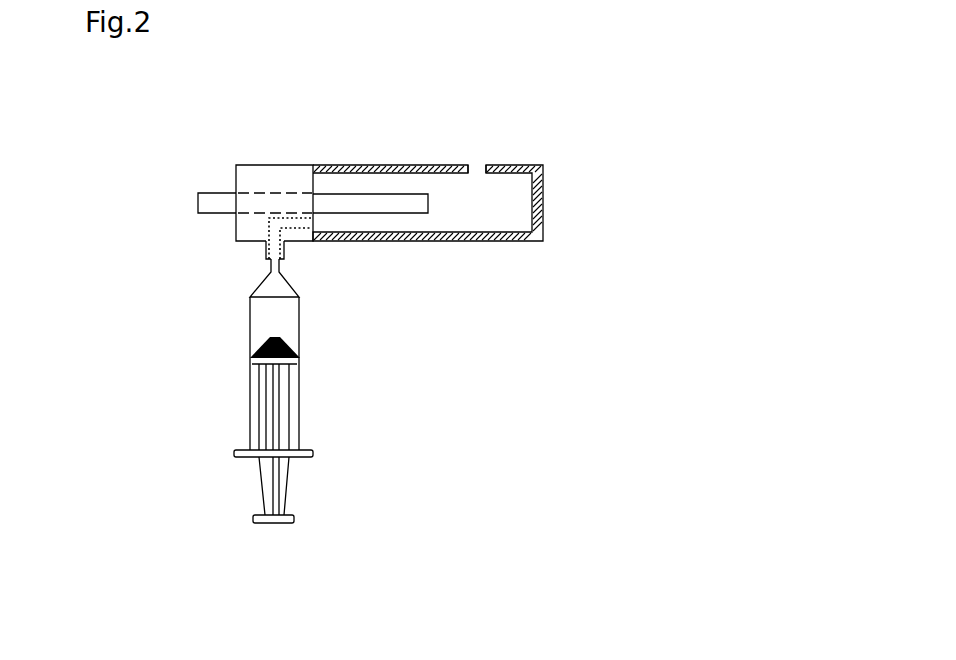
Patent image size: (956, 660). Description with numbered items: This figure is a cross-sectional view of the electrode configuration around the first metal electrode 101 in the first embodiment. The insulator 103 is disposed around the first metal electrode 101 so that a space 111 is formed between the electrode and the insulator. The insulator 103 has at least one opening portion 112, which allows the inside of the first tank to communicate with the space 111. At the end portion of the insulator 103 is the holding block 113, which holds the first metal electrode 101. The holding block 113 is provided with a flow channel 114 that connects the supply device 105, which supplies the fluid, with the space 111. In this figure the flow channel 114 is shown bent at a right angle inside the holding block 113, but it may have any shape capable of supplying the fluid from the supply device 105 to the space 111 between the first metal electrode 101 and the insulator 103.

The first metal electrode 101 is at (216, 203).
The insulator 103 is at (375, 238).
The supply device 105 is at (292, 320).
The space 111 is at (475, 210).
The opening portion 112 is at (476, 161).
The holding block 113 is at (250, 233).
The flow channel 114 is at (290, 225).